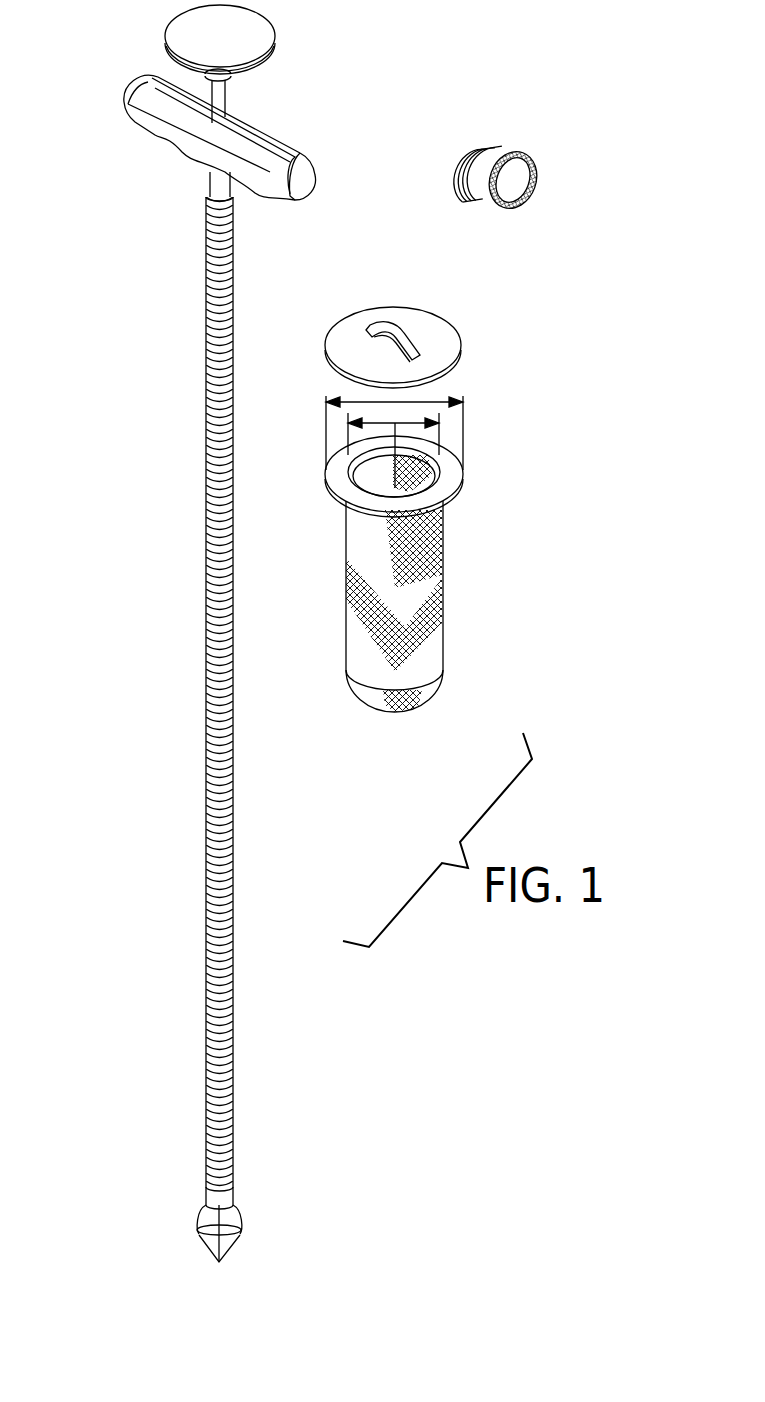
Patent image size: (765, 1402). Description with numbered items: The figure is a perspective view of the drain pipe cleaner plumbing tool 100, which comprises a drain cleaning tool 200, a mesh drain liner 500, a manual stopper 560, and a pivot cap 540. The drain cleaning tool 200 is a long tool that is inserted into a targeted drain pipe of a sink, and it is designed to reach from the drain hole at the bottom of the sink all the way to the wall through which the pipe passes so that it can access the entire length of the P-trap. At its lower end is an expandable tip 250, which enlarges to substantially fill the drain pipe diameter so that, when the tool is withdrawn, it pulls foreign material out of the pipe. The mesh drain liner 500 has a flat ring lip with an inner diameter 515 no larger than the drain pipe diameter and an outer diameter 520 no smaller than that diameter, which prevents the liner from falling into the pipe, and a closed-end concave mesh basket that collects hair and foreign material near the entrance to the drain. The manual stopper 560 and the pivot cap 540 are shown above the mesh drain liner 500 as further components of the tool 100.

The drain pipe cleaner plumbing tool 100 is at (578, 93).
The drain cleaning tool 200 is at (206, 802).
The expandable tip 250 is at (227, 1250).
The mesh drain liner 500 is at (443, 583).
The inner diameter 515 is at (398, 483).
The outer diameter 520 is at (395, 400).
The pivot cap 540 is at (537, 165).
The manual stopper 560 is at (457, 325).